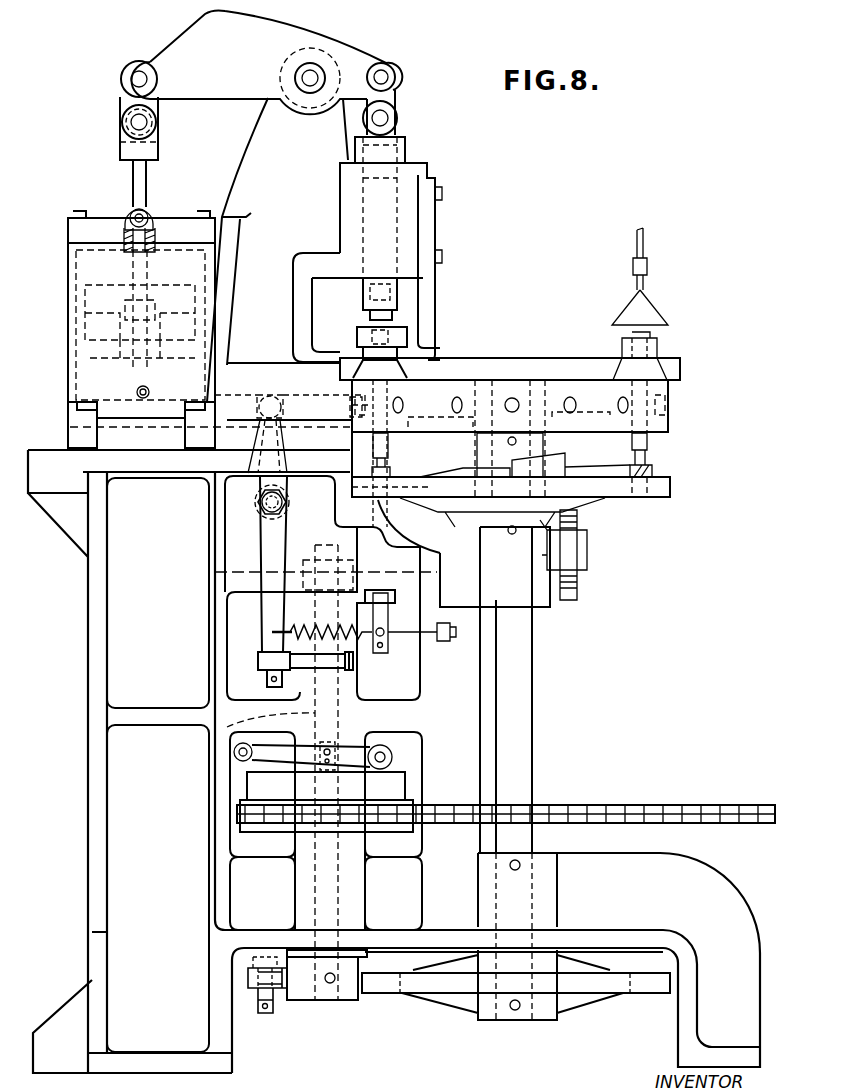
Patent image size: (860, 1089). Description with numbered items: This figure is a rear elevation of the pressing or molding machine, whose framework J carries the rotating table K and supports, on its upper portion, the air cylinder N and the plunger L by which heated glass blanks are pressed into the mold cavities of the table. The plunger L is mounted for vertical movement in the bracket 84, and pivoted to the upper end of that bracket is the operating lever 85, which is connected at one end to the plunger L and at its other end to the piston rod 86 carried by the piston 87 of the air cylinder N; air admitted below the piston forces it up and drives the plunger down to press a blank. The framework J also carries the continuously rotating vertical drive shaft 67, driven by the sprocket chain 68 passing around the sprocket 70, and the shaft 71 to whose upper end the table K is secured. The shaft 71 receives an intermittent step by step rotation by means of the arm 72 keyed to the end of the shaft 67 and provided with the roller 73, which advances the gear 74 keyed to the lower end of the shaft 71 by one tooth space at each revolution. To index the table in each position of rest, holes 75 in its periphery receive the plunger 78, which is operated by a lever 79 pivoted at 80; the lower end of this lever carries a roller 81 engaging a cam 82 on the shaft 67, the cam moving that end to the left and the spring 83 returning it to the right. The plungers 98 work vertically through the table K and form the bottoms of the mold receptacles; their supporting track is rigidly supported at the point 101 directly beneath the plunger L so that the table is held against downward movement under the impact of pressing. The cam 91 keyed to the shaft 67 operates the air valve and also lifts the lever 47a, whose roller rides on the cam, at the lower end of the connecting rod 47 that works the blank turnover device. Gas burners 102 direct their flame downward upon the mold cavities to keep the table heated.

The framework of the press J is at (95, 752).
The air cylinder N is at (68, 265).
The rotating table K is at (438, 385).
The plunger L is at (400, 297).
The connecting rod 47 is at (215, 729).
The lever 47a is at (265, 756).
The vertical drive shaft 67 is at (325, 891).
The sprocket chain 68 is at (645, 797).
The sprocket 70 is at (375, 825).
The shaft 71 is at (522, 677).
The arm 72 is at (304, 993).
The roller 73 is at (262, 995).
The gear 74 is at (440, 995).
The holes 75 is at (570, 398).
The plunger 78 is at (340, 400).
The lever 79 is at (285, 531).
The pivot 80 is at (262, 505).
The roller 81 is at (258, 661).
The cam 82 is at (353, 660).
The spring 83 is at (300, 630).
The bracket 84 is at (412, 225).
The operating lever 85 is at (305, 37).
The piston rod 86 is at (133, 175).
The piston 87 is at (68, 312).
The cam 91 is at (392, 784).
The plungers 98 is at (385, 448).
The rigid support point 101 is at (429, 540).
The gas burners 102 is at (660, 318).